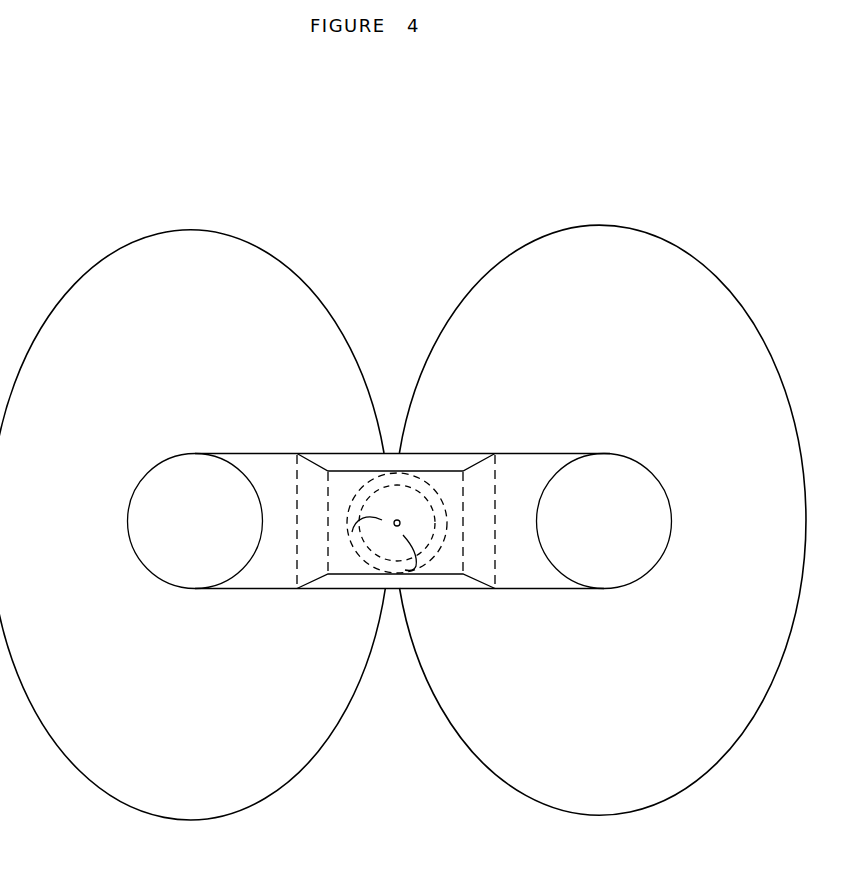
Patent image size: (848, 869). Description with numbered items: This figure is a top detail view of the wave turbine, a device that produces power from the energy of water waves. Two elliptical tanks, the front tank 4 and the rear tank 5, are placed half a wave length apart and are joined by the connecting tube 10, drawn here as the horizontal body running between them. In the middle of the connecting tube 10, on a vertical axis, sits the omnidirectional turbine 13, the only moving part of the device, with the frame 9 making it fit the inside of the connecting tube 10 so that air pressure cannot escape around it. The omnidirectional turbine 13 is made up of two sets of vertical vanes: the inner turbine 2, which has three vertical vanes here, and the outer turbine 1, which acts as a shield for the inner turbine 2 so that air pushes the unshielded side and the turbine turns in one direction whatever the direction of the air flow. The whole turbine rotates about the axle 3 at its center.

The outer turbine 1 is at (340, 590).
The inner turbine 2 is at (376, 503).
The axle 3 is at (412, 497).
The front tank 4 is at (308, 333).
The rear tank 5 is at (693, 320).
The frame 9 is at (306, 602).
The connecting tube 10 is at (647, 443).
The omnidirectional turbine 13 is at (384, 560).